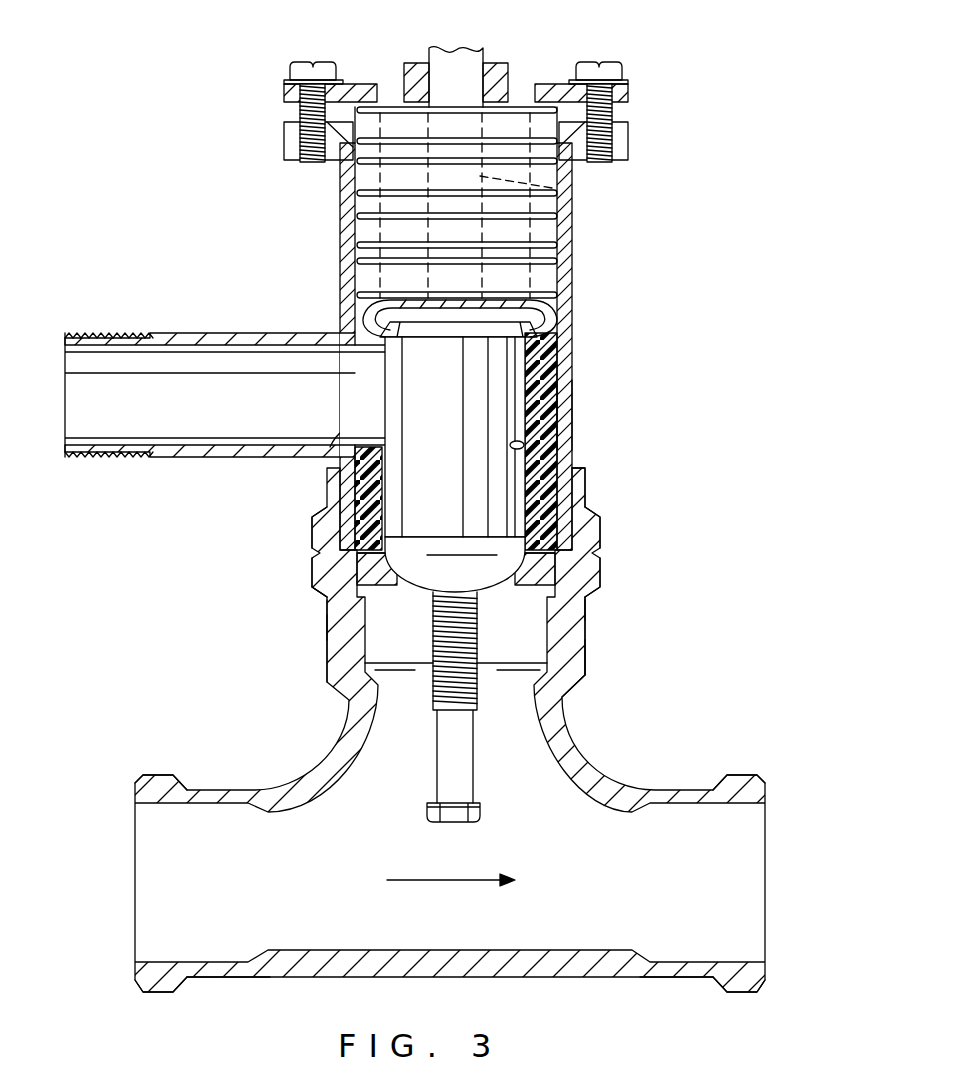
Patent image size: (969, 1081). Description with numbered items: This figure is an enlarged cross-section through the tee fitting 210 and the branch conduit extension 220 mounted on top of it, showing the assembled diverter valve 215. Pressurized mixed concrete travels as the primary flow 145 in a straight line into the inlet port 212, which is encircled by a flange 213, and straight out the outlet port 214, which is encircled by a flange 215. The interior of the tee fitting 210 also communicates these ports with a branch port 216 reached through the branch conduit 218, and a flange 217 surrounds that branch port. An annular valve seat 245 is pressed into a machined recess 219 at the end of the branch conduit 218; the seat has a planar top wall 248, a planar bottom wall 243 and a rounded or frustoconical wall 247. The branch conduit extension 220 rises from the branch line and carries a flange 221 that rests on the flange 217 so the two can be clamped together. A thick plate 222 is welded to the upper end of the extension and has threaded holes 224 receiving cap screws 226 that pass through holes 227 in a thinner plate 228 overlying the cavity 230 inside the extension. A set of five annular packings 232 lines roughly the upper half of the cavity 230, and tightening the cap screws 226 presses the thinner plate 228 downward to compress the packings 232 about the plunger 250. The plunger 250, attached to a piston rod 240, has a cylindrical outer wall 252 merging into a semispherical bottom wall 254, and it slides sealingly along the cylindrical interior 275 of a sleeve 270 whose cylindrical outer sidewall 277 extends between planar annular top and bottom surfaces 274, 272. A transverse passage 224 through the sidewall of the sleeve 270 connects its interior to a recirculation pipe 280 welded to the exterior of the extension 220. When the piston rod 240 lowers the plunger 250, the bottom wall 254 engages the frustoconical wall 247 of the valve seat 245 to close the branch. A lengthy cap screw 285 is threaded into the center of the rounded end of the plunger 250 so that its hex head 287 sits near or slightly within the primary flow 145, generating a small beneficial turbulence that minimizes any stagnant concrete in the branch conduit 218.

The primary flow arrow 145 is at (446, 882).
The tee fitting 210 is at (603, 758).
The inlet port 212 is at (205, 977).
The flange 213 is at (152, 775).
The outlet port 214 is at (700, 977).
The diverter valve 215 is at (707, 394).
The branch port 216 is at (327, 663).
The flange 217 is at (312, 575).
The branch conduit 218 is at (585, 650).
The machined recess 219 is at (327, 598).
The branch conduit extension 220 is at (572, 232).
The flange 221 is at (312, 522).
The thick plate 222 is at (284, 130).
The threaded holes / transverse passage 224 is at (312, 162).
The cap screws 226 is at (300, 64).
The holes 227 is at (326, 64).
The thinner plate 228 is at (284, 92).
The cavity 230 is at (504, 152).
The annular packings 232 is at (368, 343).
The piston rod 240 is at (440, 52).
The bottom wall 243 is at (585, 598).
The annular valve seat 245 is at (556, 562).
The frustoconical wall 247 is at (327, 628).
The top wall 248 is at (585, 502).
The plunger 250 is at (495, 392).
The cylindrical outer wall 252 is at (482, 366).
The semispherical bottom wall 254 is at (556, 622).
The sleeve 270 is at (573, 415).
The bottom surface 272 is at (358, 566).
The top surface 274 is at (556, 304).
The cylindrical interior 275 is at (524, 446).
The cylindrical outer sidewall 277 is at (548, 378).
The recirculation pipe 280 is at (215, 333).
The cap screw 285 is at (470, 740).
The hex head 287 is at (462, 822).